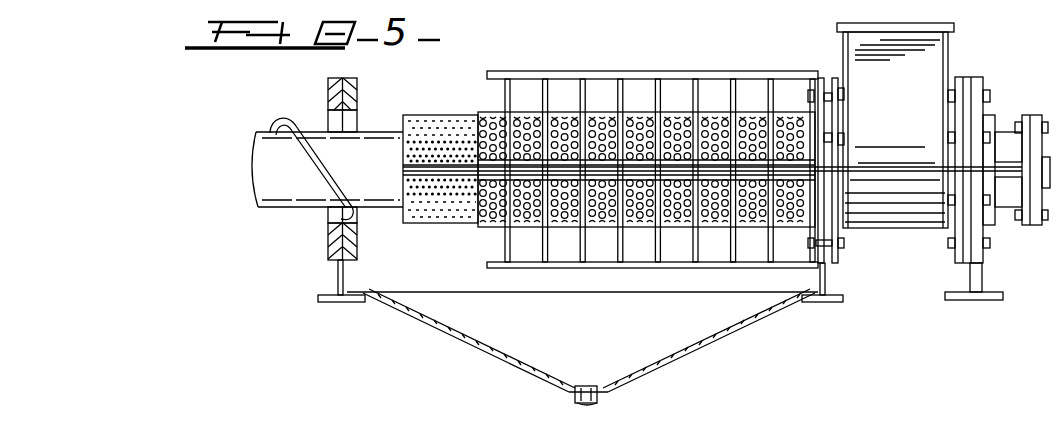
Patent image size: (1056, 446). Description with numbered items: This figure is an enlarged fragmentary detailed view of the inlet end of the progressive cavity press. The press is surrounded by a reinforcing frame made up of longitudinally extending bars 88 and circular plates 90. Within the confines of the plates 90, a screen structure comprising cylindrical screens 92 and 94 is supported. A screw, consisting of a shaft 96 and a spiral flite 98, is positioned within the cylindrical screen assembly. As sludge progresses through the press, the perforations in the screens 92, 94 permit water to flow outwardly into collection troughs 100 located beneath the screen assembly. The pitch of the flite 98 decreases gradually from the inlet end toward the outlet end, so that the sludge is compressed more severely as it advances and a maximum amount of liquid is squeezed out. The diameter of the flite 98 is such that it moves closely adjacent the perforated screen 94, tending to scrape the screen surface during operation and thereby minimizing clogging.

The longitudinally extending bars 88 is at (526, 73).
The circular plates 90 is at (652, 98).
The cylindrical screen 92 is at (490, 113).
The cylindrical screen 94 is at (428, 117).
The shaft 96 is at (276, 200).
The flite 98 is at (290, 122).
The collection troughs 100 is at (415, 322).